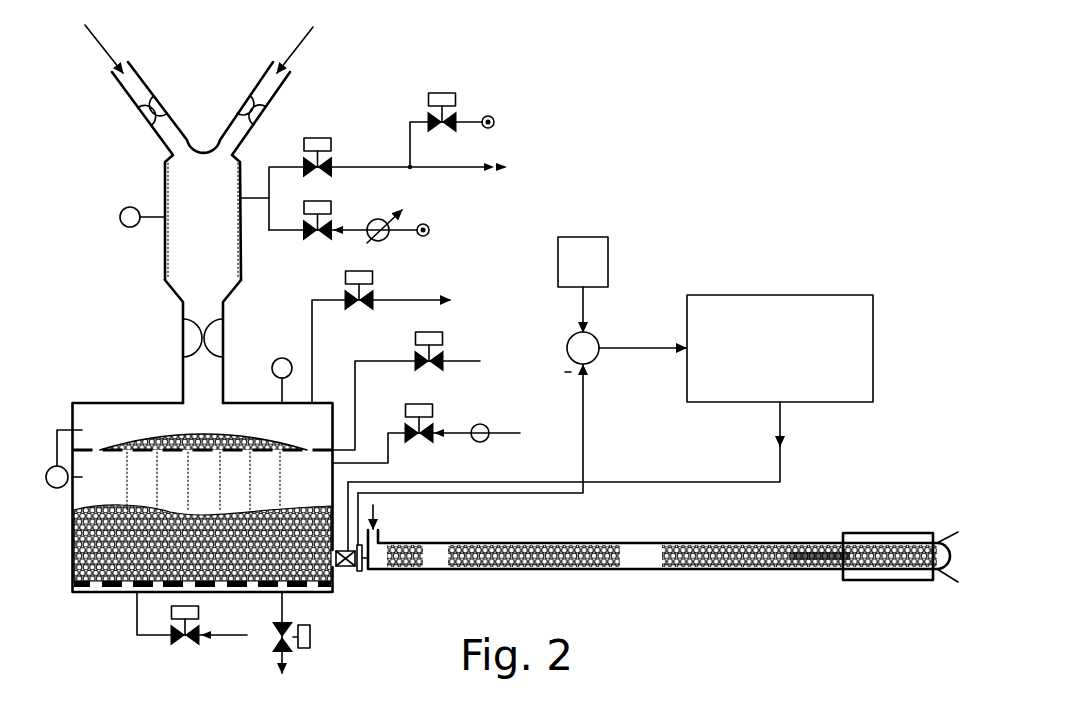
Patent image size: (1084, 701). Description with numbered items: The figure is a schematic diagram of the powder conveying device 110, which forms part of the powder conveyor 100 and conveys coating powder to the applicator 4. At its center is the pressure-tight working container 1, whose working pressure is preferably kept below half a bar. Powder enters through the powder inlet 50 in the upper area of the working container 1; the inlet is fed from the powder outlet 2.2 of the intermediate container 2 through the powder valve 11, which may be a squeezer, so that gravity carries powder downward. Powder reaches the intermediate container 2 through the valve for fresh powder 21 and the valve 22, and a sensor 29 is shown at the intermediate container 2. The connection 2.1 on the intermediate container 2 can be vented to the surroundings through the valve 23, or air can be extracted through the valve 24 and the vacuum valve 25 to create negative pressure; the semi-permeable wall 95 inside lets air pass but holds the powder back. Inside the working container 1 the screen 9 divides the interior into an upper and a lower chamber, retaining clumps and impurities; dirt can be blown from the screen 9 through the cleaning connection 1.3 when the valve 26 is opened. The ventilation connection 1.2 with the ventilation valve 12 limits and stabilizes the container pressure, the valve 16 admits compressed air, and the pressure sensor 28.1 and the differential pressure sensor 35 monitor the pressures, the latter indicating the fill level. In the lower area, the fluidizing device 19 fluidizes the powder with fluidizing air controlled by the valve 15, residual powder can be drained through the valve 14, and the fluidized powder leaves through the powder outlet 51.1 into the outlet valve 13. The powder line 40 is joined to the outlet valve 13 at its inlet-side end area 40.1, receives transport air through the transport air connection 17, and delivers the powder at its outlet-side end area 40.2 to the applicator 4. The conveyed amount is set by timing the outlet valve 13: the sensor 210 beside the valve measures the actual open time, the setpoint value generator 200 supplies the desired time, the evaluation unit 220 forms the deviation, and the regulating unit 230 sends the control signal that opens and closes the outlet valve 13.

The working container 1 is at (72, 417).
The intermediate container 2 is at (153, 192).
The connection on the intermediate container 2.1 is at (243, 200).
The powder outlet of the intermediate container 2.2 is at (207, 317).
The applicator 4 is at (895, 533).
The ultrasonic screen 9 is at (110, 447).
The valve 11 is at (183, 337).
The ventilation valve 12 is at (375, 292).
The outlet valve 13 is at (343, 567).
The valve 14 is at (313, 647).
The valve 15 is at (197, 645).
The valve 16 is at (433, 425).
The transport air connection 17 is at (375, 572).
The fluidizing device 19 is at (113, 592).
The valve for fresh powder 21 is at (157, 103).
The valve 22 is at (247, 105).
The valve 23 is at (330, 158).
The valve 24 is at (333, 222).
The vacuum valve or negative pressure generator 25 is at (457, 120).
The valve 26 is at (443, 353).
The pressure sensor 28.1 is at (272, 368).
The sensor 29 is at (121, 222).
The differential pressure sensor 35 is at (58, 488).
The powder line 40 is at (690, 543).
The first end of the powder line 40.1 is at (397, 542).
The second end of the powder line 40.2 is at (837, 543).
The powder inlet 50 is at (197, 400).
The powder outlet 51.1 is at (323, 593).
The semi-permeable wall 95 is at (164, 242).
The powder conveyor 100 is at (132, 345).
The powder conveying device 110 is at (580, 166).
The setpoint value generator 200 is at (587, 237).
The sensor 210 is at (358, 570).
The evaluation unit 220 is at (570, 340).
The regulating unit 230 is at (808, 295).
The ventilation connection 1.2 is at (313, 400).
The cleaning connection 1.3 is at (340, 447).